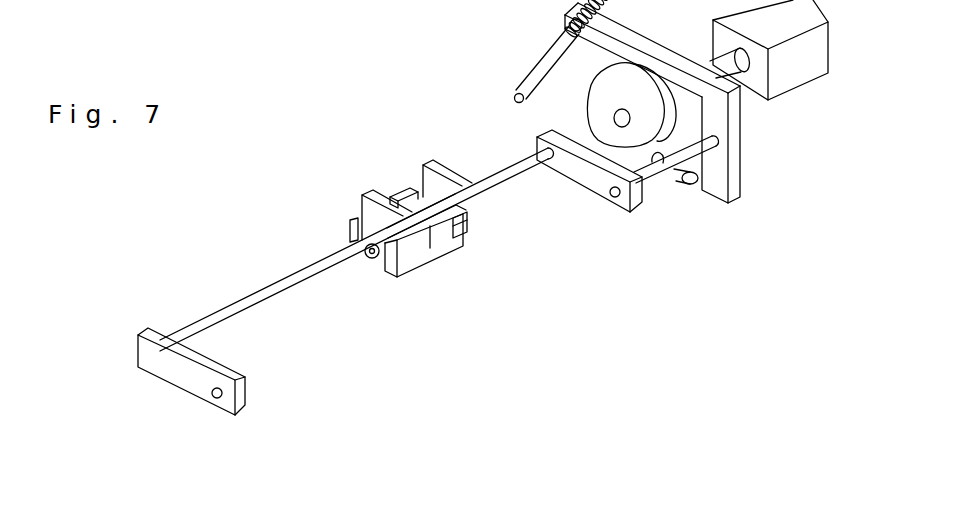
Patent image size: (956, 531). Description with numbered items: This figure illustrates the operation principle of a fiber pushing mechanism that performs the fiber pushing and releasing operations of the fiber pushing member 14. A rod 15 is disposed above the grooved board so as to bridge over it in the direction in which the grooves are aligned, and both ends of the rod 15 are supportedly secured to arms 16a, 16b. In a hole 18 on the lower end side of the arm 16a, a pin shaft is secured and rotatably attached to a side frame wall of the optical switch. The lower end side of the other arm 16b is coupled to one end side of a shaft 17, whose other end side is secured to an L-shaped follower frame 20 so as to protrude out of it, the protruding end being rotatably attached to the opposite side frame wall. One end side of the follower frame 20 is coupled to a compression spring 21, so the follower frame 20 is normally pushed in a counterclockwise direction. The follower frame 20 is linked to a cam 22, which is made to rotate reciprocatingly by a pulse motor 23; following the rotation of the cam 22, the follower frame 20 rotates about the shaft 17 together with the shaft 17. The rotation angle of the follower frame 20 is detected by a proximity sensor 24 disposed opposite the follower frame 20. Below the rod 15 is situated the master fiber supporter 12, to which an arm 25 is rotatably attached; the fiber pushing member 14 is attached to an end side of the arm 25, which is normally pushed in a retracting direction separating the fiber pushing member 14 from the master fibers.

The master fiber supporter 12 is at (416, 260).
The fiber pushing member 14 is at (460, 232).
The rod 15 is at (310, 276).
The arm 16a is at (212, 366).
The arm 16b is at (575, 180).
The shaft 17 is at (656, 176).
The hole 18 is at (213, 400).
The follower frame 20 is at (735, 161).
The compression spring 21 is at (543, 50).
The cam 22 is at (607, 99).
The pulse motor 23 is at (808, 68).
The proximity sensor 24 is at (683, 183).
The arm 25 is at (368, 210).